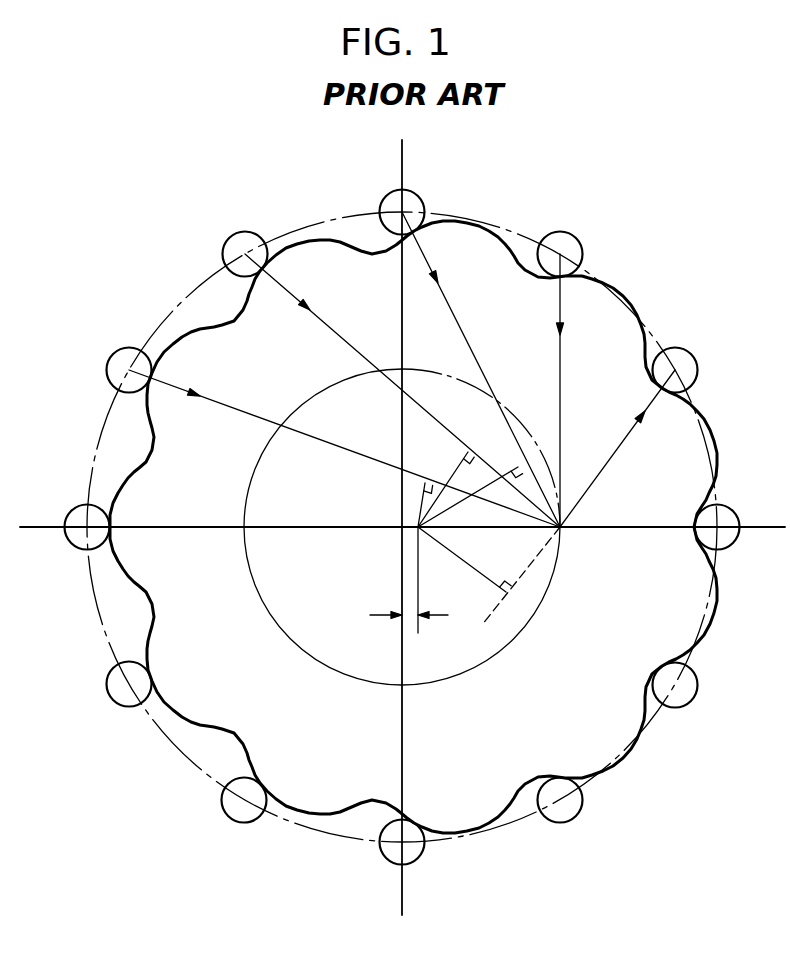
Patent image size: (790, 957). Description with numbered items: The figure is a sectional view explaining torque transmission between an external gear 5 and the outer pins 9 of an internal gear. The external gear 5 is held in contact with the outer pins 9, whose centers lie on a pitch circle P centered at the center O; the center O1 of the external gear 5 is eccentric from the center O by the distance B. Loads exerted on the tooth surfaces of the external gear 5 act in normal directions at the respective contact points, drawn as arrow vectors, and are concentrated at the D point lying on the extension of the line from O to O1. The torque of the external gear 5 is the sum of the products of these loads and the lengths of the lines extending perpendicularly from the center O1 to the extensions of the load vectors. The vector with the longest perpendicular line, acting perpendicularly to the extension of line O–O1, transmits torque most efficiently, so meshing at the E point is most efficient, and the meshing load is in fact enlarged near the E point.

The external gear 5 is at (321, 787).
The outer pins 9 is at (565, 235).
The pitch circle P is at (497, 228).
The E point E is at (588, 257).
The D point D is at (562, 531).
The center of the pitch circle O is at (396, 530).
The center of the external gear O1 is at (421, 530).
The eccentricity B is at (410, 620).